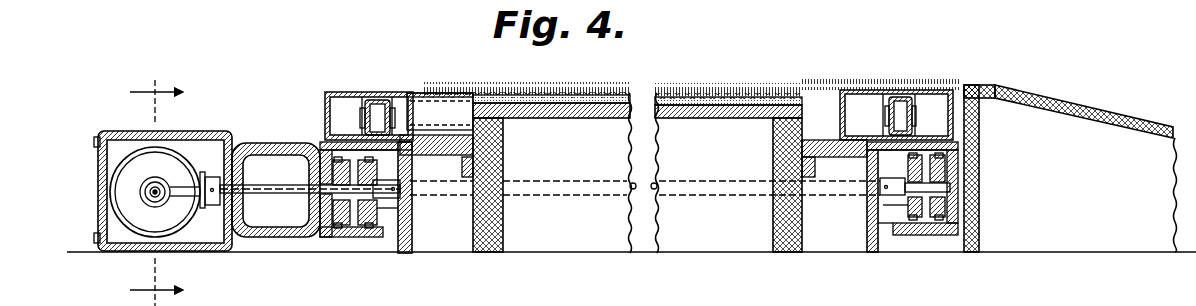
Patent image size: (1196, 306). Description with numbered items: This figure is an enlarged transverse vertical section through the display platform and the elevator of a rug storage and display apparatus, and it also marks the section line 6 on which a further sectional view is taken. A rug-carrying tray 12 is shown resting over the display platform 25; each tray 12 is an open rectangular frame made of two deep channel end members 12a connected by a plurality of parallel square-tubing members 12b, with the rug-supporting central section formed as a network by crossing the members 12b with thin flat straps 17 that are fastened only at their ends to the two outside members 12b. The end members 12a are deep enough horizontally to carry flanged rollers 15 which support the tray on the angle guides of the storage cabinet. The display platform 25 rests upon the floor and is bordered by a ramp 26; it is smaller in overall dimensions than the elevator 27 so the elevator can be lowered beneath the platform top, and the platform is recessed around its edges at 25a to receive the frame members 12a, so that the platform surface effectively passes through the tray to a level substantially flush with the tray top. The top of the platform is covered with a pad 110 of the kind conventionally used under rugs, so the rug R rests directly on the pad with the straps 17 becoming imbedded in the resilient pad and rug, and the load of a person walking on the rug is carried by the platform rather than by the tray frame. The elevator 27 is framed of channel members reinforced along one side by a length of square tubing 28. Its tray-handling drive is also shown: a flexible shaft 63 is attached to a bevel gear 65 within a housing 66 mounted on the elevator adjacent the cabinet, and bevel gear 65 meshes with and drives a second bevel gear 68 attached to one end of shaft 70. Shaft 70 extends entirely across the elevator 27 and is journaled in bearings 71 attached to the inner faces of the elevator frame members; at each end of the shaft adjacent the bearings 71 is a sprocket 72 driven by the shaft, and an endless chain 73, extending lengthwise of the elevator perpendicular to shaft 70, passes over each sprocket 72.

The section line 6- 6 is at (156, 186).
The rug-carrying tray 12 is at (402, 90).
The end member 12a is at (325, 111).
The parallel member 12b is at (450, 105).
The roller 15 is at (377, 112).
The strap 17 is at (563, 108).
The display platform 25 is at (699, 118).
The edge recess 25a is at (473, 138).
The ramp 26 is at (1075, 105).
The elevator 27 is at (364, 237).
The square tubing 28 is at (275, 237).
The flexible shaft 63 is at (148, 190).
The bevel gear 65 is at (174, 156).
The housing 66 is at (98, 167).
The second bevel gear 68 is at (215, 210).
The shaft 70 is at (267, 193).
The bearing 71 is at (342, 188).
The sprocket 72 is at (385, 200).
The endless chain 73 is at (380, 210).
The pad 110 is at (680, 96).
The rug R is at (603, 94).